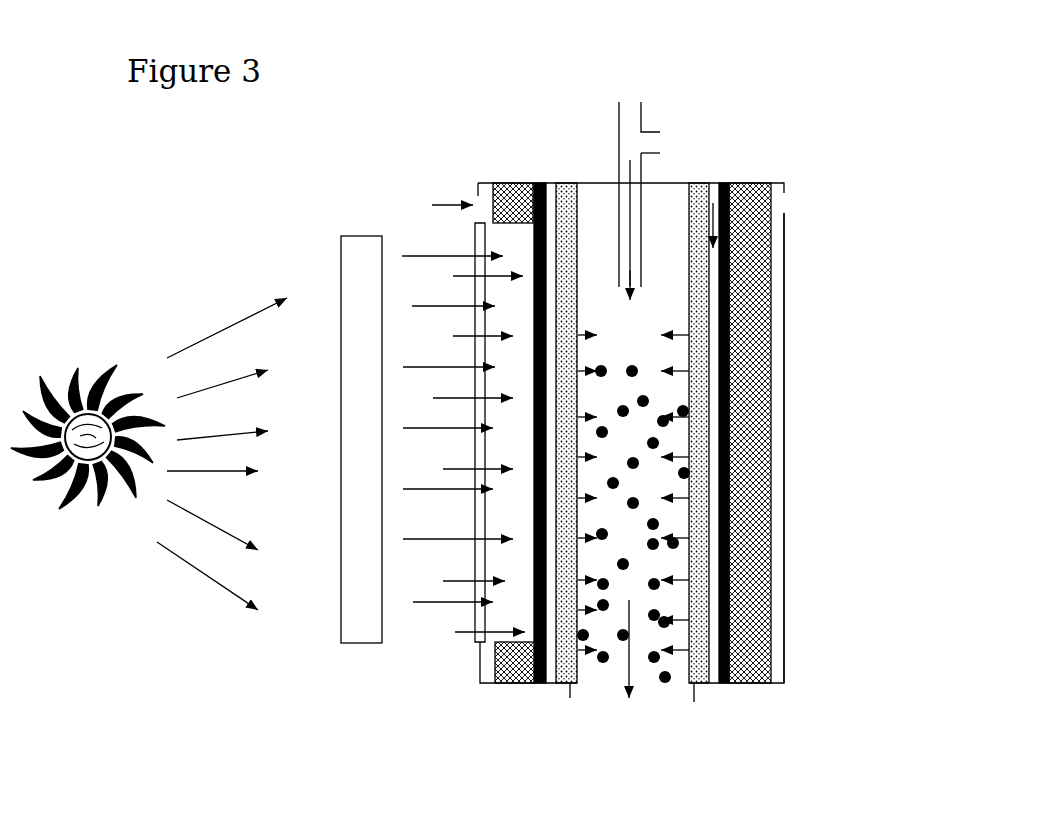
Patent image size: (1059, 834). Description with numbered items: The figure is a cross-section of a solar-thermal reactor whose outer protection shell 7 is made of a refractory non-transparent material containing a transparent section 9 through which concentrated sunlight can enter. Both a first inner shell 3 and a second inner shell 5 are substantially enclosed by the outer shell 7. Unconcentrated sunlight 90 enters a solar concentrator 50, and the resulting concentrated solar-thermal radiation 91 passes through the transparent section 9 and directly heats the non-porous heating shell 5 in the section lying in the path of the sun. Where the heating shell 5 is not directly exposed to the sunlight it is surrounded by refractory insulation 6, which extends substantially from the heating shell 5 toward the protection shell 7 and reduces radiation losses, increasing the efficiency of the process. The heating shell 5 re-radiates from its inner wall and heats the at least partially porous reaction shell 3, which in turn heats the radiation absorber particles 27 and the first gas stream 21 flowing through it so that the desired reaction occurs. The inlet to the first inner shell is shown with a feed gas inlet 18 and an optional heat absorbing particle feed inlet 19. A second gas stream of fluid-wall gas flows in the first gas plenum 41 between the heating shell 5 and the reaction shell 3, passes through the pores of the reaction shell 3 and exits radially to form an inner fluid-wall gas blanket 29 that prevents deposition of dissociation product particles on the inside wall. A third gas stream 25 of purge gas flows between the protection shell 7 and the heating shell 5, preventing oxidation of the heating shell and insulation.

The first inner shell 3 is at (700, 345).
The second inner shell 5 is at (742, 613).
The refractory insulation 6 is at (757, 470).
The outer shell 7 is at (780, 253).
The transparent section 9 is at (475, 611).
The feed gas inlet 18 is at (637, 100).
The heat absorbing particle feed inlet 19 is at (672, 143).
The first gas stream 21 is at (625, 90).
The third gas stream 25 is at (423, 204).
The radiation absorber particles 27 is at (670, 683).
The fluid-wall gas blanket 29 is at (678, 498).
The first gas plenum 41 is at (710, 203).
The solar concentrator 50 is at (350, 287).
The unconcentrated sunlight 90 is at (149, 454).
The concentrated solar-thermal radiation 91 is at (463, 444).